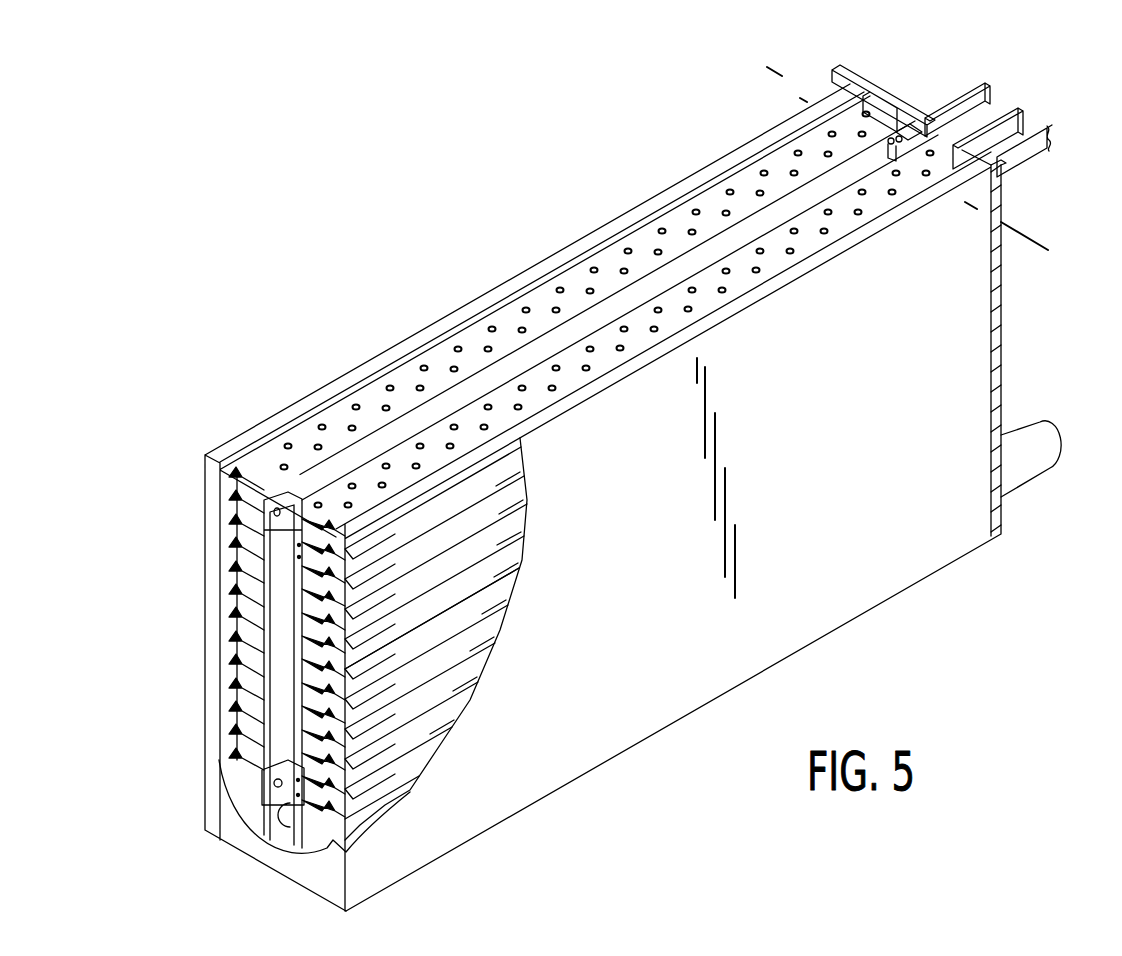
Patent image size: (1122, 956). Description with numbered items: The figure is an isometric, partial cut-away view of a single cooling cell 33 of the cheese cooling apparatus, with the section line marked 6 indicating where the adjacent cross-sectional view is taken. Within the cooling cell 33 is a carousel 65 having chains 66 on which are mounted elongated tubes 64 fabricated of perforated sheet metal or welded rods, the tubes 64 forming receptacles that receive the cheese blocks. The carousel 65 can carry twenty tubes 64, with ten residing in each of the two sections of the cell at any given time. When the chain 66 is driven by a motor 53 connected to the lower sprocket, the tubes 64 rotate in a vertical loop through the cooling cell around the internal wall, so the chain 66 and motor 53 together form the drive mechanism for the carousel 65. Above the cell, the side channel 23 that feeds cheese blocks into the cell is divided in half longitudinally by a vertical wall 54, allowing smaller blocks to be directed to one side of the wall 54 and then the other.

The cooling cell 33 is at (412, 300).
The elongated tubes 64 is at (232, 537).
The carousel 65 is at (435, 665).
The chains 66 is at (298, 492).
The side channel 23 is at (945, 107).
The vertical wall 54 is at (1003, 118).
The motor 53 is at (1020, 433).
The section line 6- 6 is at (1092, 223).